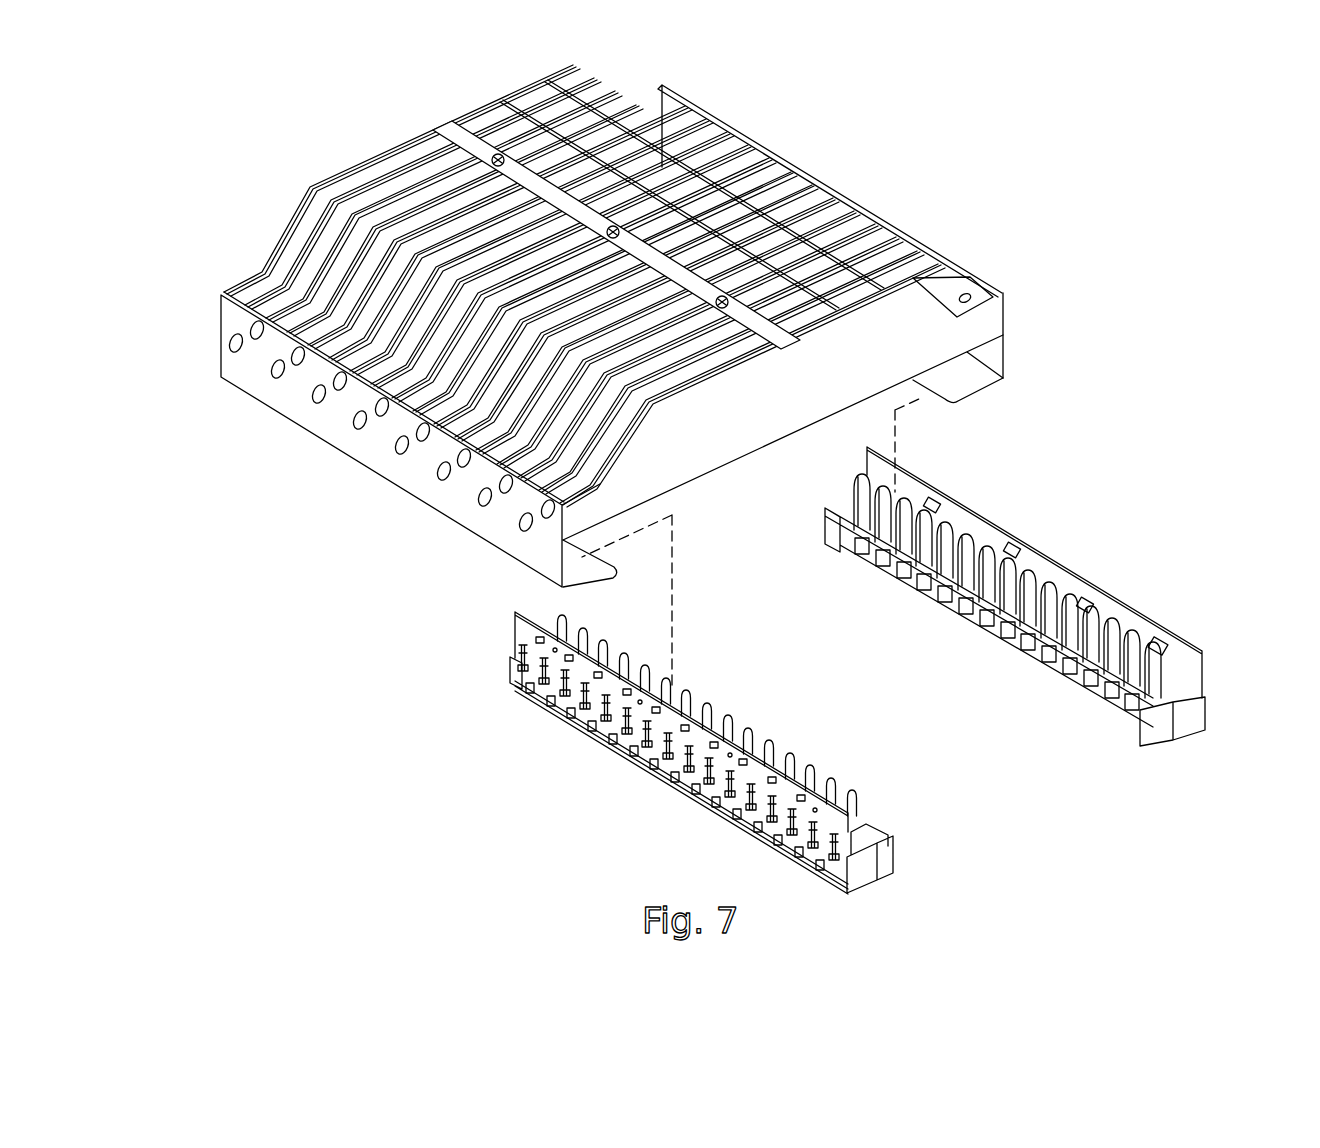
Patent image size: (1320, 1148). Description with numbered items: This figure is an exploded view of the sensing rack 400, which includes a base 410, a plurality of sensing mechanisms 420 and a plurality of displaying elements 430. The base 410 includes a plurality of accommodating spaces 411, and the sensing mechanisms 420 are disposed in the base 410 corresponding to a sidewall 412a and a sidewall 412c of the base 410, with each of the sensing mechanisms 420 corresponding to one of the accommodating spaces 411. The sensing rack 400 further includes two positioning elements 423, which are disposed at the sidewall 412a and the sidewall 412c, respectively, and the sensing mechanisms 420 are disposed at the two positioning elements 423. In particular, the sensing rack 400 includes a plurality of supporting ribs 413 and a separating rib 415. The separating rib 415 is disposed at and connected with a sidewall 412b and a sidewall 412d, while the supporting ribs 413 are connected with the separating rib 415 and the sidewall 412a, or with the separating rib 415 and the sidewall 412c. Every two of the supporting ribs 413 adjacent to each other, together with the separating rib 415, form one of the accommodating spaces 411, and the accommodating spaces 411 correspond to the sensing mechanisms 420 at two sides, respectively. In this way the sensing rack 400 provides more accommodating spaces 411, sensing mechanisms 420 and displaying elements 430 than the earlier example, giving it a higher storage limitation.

The sensing rack 400 is at (212, 93).
The base 410 is at (275, 396).
The accommodating spaces 411 is at (381, 199).
The sidewall 412a is at (371, 453).
The sidewall 412b is at (278, 257).
The sidewall 412c is at (970, 287).
The sidewall 412d is at (843, 340).
The supporting ribs 413 is at (416, 163).
The separating rib 415 is at (480, 150).
The sensing mechanisms 420 is at (930, 634).
The positioning elements 423 is at (1168, 646).
The displaying elements 430 is at (517, 643).